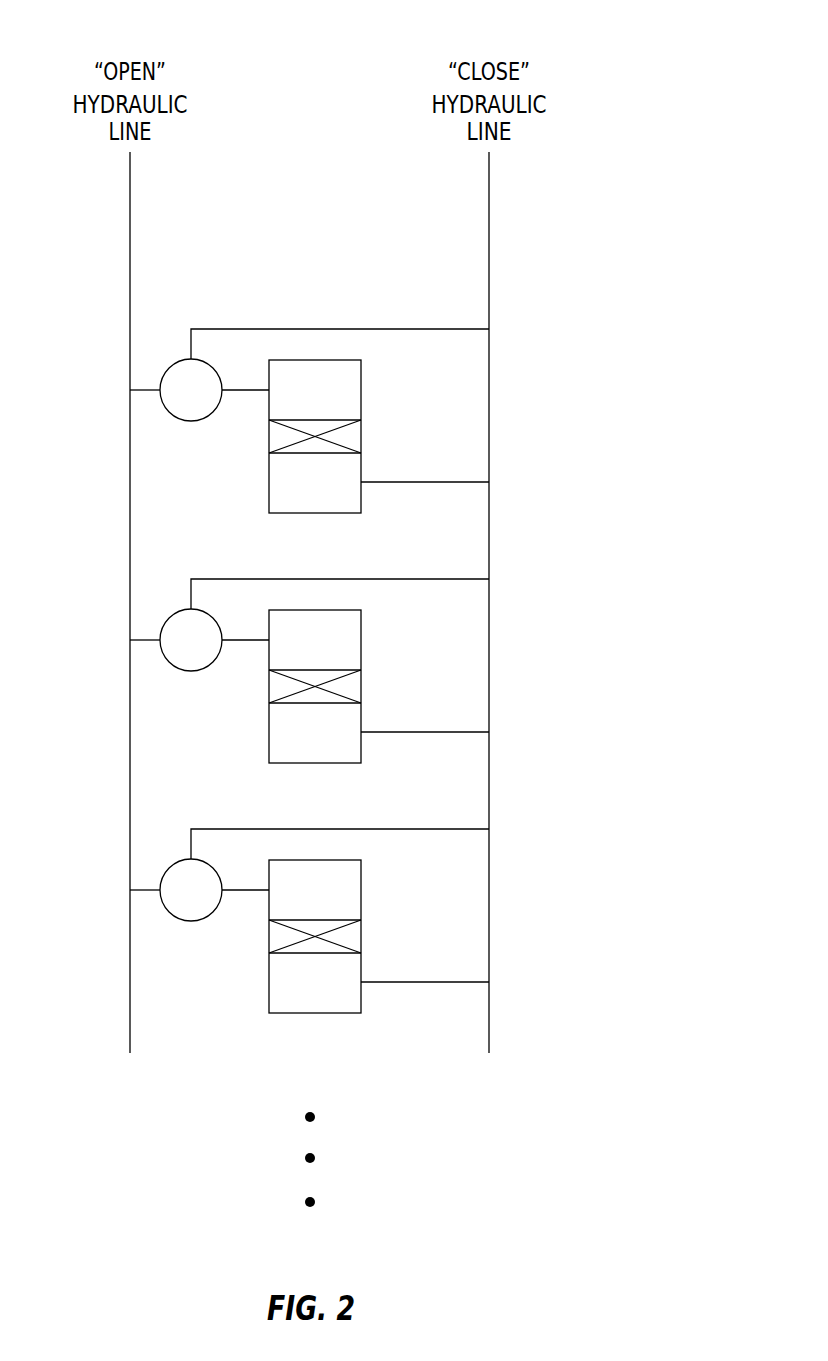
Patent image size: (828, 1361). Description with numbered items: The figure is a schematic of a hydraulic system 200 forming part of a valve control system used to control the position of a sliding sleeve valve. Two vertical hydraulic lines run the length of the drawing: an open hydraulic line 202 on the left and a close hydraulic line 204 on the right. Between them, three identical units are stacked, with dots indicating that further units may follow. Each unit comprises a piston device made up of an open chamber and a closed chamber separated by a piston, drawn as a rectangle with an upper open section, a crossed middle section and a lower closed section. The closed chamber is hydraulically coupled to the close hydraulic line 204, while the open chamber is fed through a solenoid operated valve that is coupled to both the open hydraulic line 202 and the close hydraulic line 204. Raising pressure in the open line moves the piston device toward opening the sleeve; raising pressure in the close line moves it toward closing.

The hydraulic system 200 is at (600, 45).
The open hydraulic line 202 is at (130, 243).
The close hydraulic line 204 is at (489, 243).